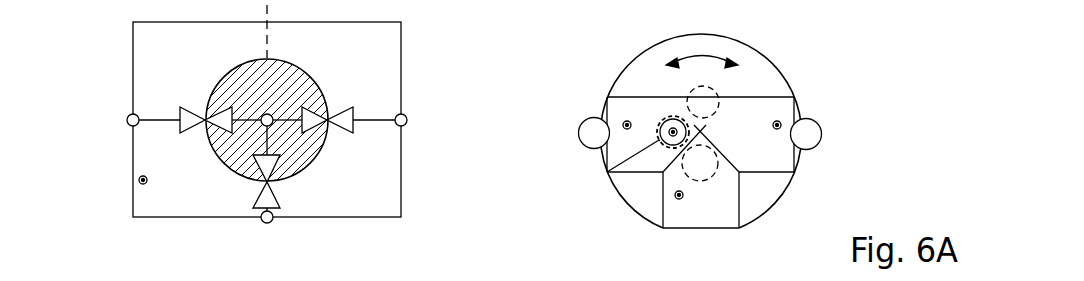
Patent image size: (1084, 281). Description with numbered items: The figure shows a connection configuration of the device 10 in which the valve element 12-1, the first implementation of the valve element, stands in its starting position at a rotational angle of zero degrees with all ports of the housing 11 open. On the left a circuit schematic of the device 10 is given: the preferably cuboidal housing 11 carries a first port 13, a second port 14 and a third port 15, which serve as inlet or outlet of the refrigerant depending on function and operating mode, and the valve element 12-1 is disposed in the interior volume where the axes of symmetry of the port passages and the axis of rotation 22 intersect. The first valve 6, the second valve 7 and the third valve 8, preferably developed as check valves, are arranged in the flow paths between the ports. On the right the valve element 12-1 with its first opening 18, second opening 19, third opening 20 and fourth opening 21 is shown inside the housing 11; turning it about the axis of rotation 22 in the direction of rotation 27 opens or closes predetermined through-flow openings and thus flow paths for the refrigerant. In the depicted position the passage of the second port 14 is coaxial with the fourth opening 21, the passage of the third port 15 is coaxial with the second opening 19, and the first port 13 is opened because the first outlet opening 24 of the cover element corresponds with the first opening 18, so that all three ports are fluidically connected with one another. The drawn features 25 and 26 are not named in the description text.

The device 10 is at (118, 74).
The valve element (first implementation) 12-1 is at (232, 72).
The axis of rotation 22 is at (268, 55).
The second valve 7 is at (188, 133).
The third valve 8 is at (347, 133).
The first valve 6 is at (282, 197).
The second port 14 is at (127, 125).
The third port 15 is at (408, 118).
The first port 13 is at (262, 223).
The housing 11 is at (139, 182).
The first opening 18 is at (669, 128).
The fourth opening 21 is at (624, 122).
The second opening 19 is at (780, 122).
The third opening 20 is at (676, 198).
The first outlet opening 24 is at (659, 141).
The upper passage 26 is at (713, 117).
The lower passage 25 is at (713, 174).
The direction of rotation 27 is at (703, 58).